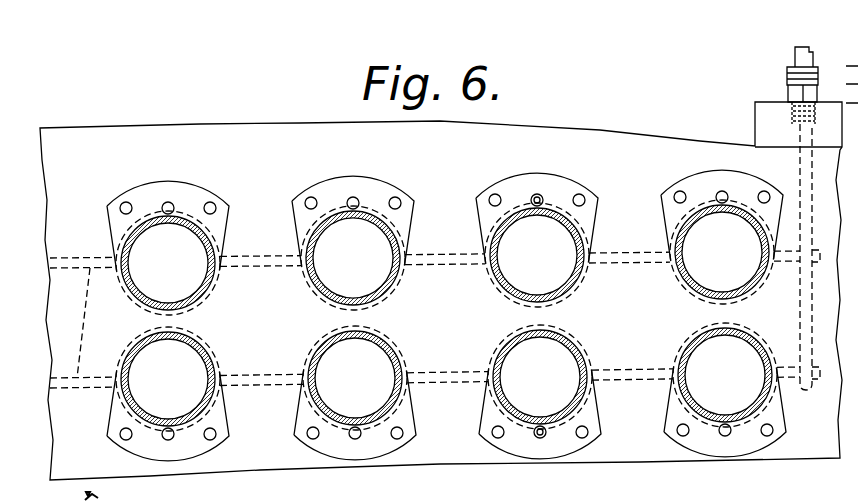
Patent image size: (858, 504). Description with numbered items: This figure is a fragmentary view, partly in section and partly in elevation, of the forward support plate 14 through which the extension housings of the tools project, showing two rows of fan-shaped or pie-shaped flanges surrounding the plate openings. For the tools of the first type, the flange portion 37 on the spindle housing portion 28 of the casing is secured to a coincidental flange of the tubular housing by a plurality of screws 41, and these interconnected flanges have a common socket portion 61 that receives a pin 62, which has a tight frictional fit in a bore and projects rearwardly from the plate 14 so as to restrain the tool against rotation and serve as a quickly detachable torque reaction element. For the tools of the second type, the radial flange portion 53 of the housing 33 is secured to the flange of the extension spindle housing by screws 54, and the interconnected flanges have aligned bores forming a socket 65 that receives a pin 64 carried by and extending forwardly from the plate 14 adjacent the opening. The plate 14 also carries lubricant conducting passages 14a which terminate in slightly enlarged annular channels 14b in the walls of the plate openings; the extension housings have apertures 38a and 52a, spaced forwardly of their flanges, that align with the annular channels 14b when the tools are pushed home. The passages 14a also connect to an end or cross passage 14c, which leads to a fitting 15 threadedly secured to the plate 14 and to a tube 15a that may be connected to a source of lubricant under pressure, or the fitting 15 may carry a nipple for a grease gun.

The forward support plate 14 is at (238, 462).
The lubricant conducting passages 14a is at (87, 323).
The annular channels 14b is at (214, 237).
The end or cross passage 14c is at (800, 313).
The fitting 15 is at (787, 91).
The tube 15a is at (795, 56).
The spindle housing portion 28 is at (393, 288).
The housing 33 is at (395, 347).
The flange portion 37 is at (378, 192).
The aperture 38a is at (130, 262).
The screws 41 is at (123, 203).
The aperture 52a is at (130, 382).
The radial flange portion 53 is at (490, 410).
The screws 54 is at (311, 438).
The socket portion 61 is at (543, 199).
The pin 62 is at (537, 196).
The pin 64 is at (541, 436).
The socket 65 is at (538, 437).